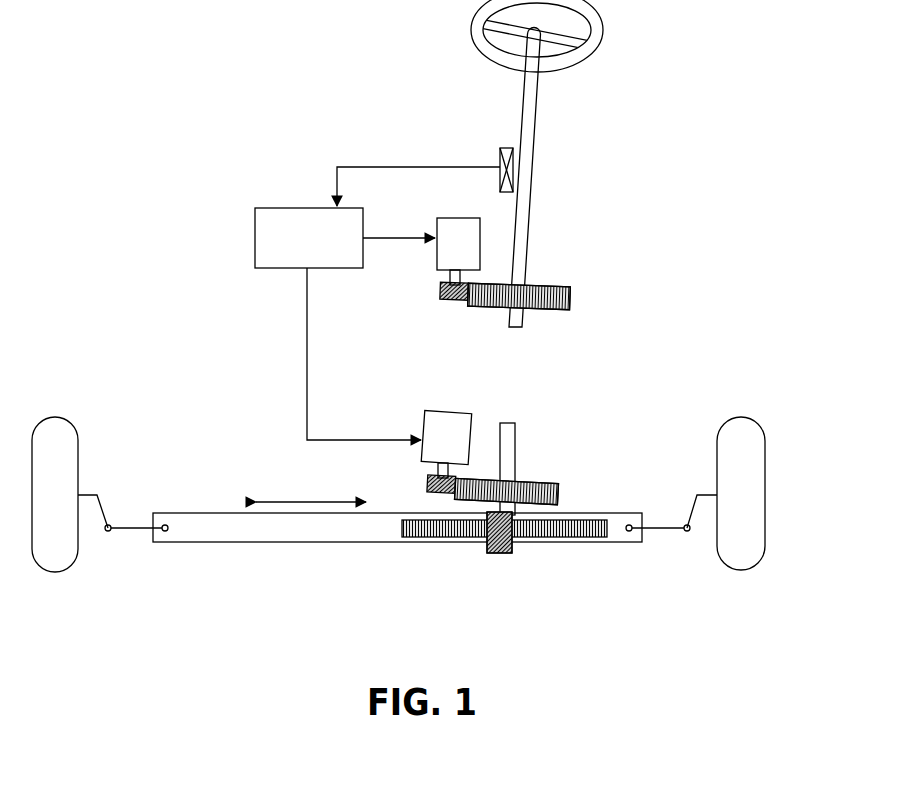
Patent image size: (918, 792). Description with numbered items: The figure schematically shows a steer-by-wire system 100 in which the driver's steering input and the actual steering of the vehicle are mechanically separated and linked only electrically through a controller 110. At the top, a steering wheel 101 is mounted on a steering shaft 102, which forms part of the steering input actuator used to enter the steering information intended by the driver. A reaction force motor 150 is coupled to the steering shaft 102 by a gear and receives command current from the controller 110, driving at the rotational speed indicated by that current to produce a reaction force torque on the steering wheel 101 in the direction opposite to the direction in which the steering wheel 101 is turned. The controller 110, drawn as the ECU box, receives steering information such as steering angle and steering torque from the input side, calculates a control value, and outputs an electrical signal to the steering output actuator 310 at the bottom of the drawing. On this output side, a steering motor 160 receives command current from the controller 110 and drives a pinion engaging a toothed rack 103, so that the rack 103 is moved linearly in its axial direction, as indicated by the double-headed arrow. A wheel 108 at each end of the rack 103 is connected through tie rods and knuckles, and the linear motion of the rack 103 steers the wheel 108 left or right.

The steer-by-wire system 100 is at (190, 32).
The steering wheel 101 is at (475, 10).
The steering shaft 102 is at (536, 137).
The rack 103 is at (293, 536).
The wheel 108 is at (750, 428).
The controller 110 is at (265, 208).
The reaction force motor 150 is at (440, 256).
The steering motor 160 is at (431, 433).
The steering output actuator 310 is at (524, 560).